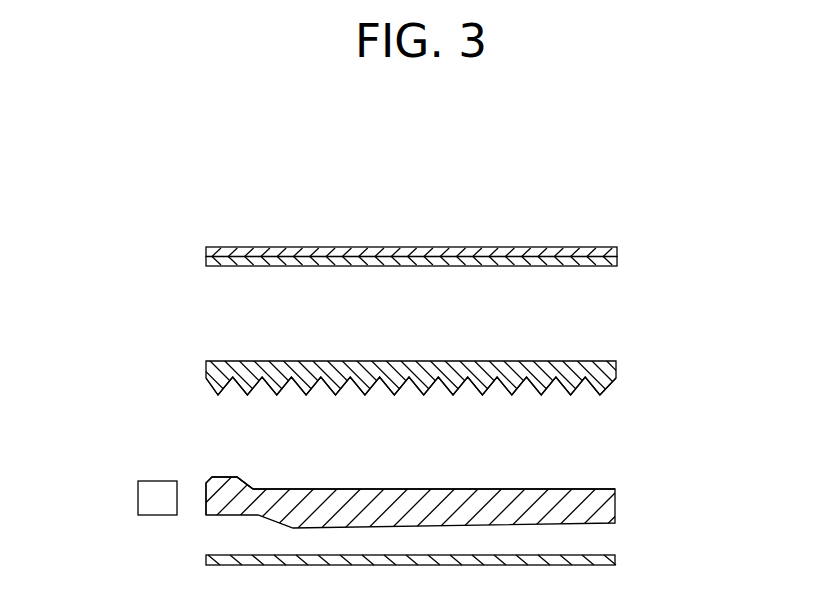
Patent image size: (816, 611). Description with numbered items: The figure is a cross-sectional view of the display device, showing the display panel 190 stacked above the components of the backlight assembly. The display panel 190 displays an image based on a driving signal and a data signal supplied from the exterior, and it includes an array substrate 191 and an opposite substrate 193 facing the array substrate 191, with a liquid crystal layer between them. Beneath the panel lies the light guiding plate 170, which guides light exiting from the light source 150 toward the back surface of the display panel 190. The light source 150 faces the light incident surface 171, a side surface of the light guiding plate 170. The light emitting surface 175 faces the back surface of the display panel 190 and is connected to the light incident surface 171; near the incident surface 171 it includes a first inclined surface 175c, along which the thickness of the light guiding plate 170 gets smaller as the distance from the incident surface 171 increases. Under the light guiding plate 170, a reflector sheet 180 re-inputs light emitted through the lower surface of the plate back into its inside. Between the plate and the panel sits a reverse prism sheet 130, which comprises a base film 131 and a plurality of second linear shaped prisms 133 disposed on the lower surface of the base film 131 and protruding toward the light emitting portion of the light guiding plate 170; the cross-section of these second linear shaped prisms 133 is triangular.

The reverse prism sheet 130 is at (449, 364).
The base film 131 is at (593, 361).
The second linear shaped prisms 133 is at (616, 378).
The light source 150 is at (138, 497).
The light guiding plate 170 is at (615, 503).
The light incident surface 171 is at (205, 490).
The light emitting surface 175 is at (485, 489).
The first inclined surface 175c is at (250, 482).
The reflector sheet 180 is at (615, 558).
The display panel 190 is at (472, 256).
The array substrate 191 is at (617, 258).
The opposite substrate 193 is at (617, 255).